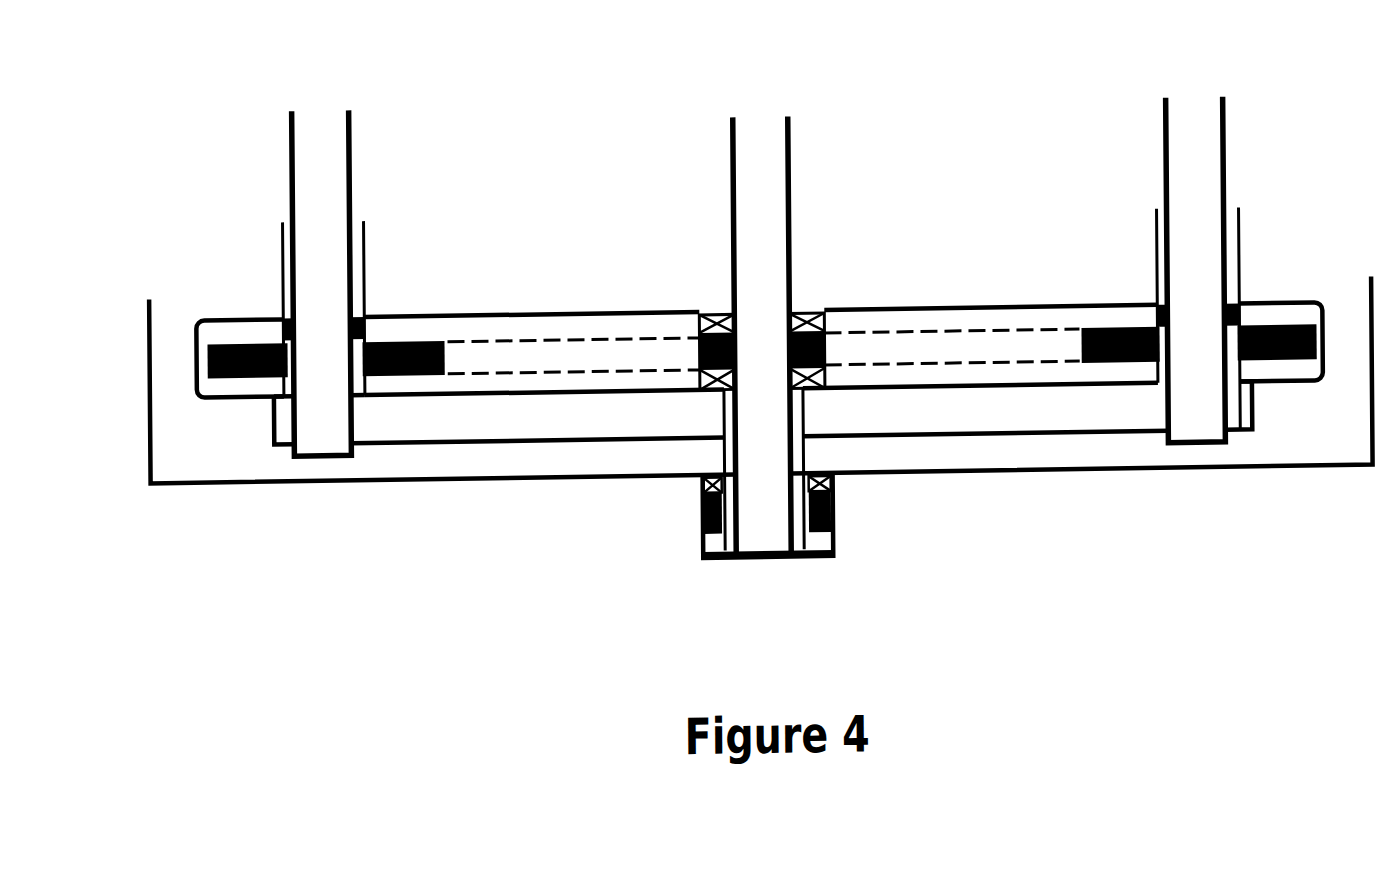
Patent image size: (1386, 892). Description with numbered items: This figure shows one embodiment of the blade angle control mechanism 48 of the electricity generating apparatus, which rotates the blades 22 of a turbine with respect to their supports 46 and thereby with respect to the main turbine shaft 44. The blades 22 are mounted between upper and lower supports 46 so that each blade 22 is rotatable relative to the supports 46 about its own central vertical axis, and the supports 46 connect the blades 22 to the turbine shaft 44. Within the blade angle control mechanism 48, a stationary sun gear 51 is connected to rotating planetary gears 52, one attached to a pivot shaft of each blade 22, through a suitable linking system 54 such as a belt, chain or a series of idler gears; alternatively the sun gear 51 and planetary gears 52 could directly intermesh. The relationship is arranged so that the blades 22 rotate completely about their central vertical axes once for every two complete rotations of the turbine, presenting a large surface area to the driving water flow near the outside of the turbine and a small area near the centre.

The blade 22 is at (283, 231).
The turbine shaft 44 is at (716, 557).
The supports 46 is at (1005, 411).
The blade angle control mechanism 48 is at (185, 428).
The sun gear 51 is at (700, 352).
The planetary gears 52 is at (233, 370).
The linking system 54 is at (539, 335).